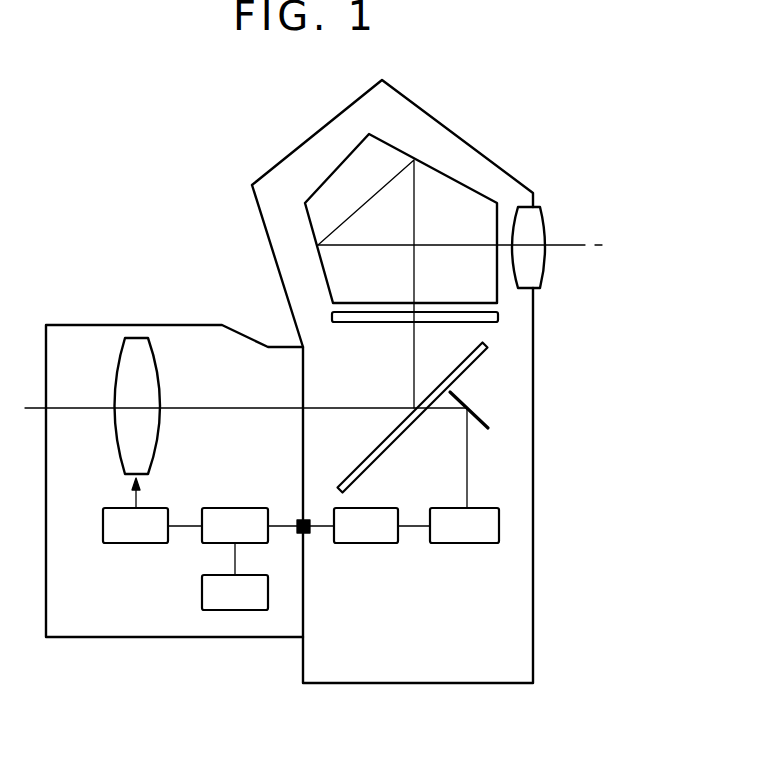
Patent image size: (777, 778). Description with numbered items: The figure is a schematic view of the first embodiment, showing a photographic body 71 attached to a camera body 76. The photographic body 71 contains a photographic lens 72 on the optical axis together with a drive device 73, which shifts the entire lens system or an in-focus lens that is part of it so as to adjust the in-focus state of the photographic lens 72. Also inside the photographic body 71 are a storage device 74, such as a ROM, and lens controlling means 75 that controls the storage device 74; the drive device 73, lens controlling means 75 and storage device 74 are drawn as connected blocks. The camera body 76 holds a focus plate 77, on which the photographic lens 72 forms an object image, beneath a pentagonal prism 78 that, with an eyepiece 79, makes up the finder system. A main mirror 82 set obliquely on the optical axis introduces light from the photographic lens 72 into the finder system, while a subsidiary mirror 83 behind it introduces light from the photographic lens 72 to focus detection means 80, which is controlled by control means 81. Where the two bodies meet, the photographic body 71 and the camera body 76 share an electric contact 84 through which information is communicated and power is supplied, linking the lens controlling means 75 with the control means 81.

The photographic body 71 is at (83, 332).
The photographic lens 72 is at (138, 343).
The drive device 73 is at (118, 545).
The storage device 74 is at (200, 592).
The lens controlling means 75 is at (232, 515).
The camera body 76 is at (452, 128).
The focus plate 77 is at (498, 314).
The pentagonal prism 78 is at (472, 198).
The eyepiece 79 is at (538, 222).
The focus detection means 80 is at (465, 545).
The control means 81 is at (362, 545).
The main mirror 82 is at (478, 357).
The subsidiary mirror 83 is at (478, 430).
The electric contact 84 is at (298, 518).